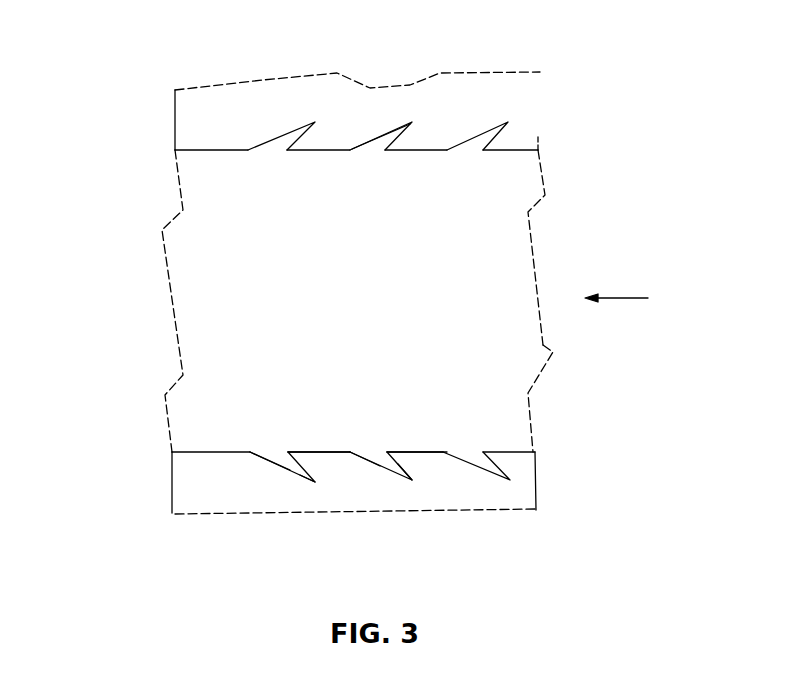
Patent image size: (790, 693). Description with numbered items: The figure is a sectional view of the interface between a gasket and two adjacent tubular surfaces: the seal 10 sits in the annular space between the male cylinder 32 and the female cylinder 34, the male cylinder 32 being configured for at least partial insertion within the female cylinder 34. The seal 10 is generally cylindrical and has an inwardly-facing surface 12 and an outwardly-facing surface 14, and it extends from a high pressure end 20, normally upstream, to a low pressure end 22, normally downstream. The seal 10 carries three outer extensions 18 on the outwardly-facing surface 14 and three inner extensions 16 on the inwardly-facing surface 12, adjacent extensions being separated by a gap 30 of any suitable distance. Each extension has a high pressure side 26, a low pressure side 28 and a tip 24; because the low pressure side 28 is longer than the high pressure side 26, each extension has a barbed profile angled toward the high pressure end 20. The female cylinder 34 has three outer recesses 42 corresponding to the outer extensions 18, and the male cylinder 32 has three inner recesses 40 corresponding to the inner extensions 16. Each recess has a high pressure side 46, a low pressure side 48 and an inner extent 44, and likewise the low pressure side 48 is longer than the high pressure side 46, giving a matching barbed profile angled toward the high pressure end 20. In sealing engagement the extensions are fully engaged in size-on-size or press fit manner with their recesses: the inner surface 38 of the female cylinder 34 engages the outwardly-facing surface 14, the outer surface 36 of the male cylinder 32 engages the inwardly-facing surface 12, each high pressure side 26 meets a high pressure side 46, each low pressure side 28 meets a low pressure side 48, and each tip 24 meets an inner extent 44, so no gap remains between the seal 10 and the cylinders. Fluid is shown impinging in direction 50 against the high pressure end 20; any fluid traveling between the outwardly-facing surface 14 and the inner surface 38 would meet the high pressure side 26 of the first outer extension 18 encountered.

The seal 10 is at (523, 212).
The inwardly-facing surface 12 is at (430, 453).
The outwardly-facing surface 14 is at (408, 150).
The inner extensions 16 is at (375, 442).
The outer extensions 18 is at (380, 145).
The high pressure end 20 is at (560, 354).
The low pressure end 22 is at (150, 406).
The tip 24 is at (388, 466).
The high pressure side 26 is at (407, 462).
The low pressure side 28 is at (362, 470).
The gap 30 is at (310, 452).
The male cylinder 32 is at (537, 511).
The female cylinder 34 is at (523, 102).
The outer surface 36 is at (515, 452).
The inner surface 38 is at (519, 150).
The inner recesses 40 is at (275, 448).
The outer recesses 42 is at (286, 146).
The inner extent 44 is at (405, 122).
The high pressure side 46 is at (318, 481).
The low pressure side 48 is at (269, 460).
The direction 50 is at (627, 298).